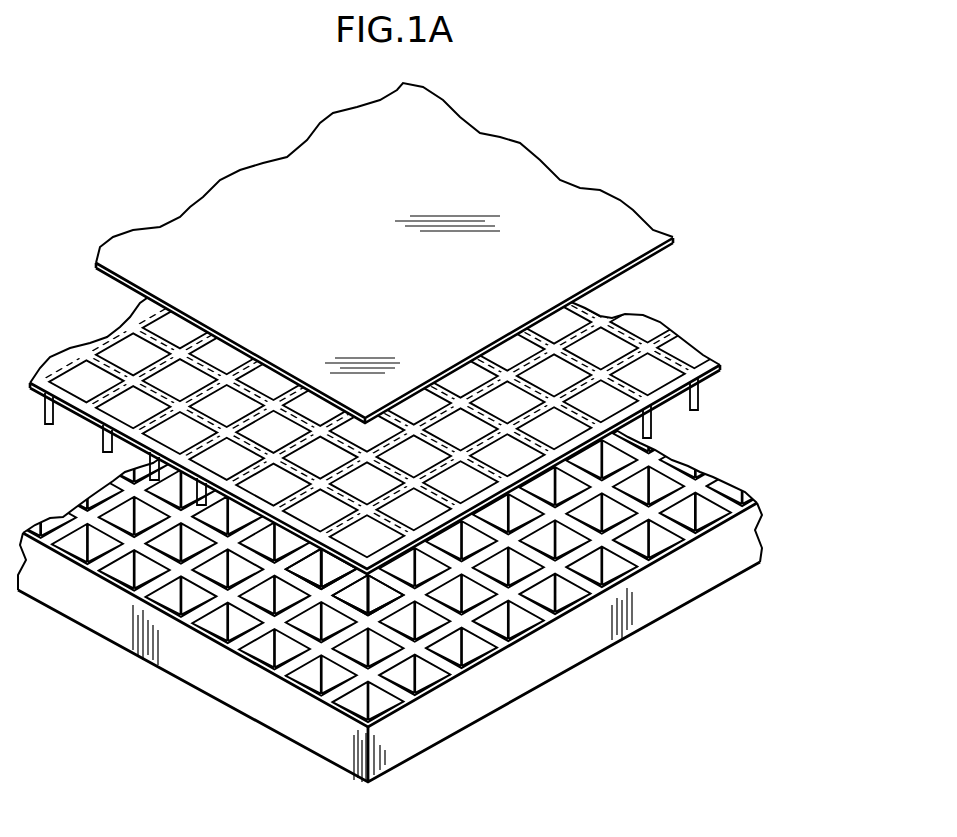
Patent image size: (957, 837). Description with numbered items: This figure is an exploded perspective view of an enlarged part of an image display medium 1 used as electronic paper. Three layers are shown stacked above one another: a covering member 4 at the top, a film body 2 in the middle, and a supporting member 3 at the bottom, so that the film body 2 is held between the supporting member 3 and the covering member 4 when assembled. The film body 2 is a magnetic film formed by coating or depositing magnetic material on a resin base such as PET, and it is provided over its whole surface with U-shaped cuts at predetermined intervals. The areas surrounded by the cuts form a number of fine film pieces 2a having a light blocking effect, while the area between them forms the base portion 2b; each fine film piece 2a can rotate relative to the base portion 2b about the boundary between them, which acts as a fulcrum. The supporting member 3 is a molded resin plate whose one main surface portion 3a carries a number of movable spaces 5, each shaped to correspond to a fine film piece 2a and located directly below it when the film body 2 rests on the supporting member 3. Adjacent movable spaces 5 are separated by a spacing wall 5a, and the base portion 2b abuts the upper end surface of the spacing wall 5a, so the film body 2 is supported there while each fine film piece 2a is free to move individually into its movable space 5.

The image display medium 1 is at (605, 134).
The film body 2 is at (393, 369).
The fine film piece 2a is at (155, 470).
The base portion 2b is at (127, 378).
The supporting member 3 is at (396, 535).
The main surface portion 3a is at (683, 467).
The covering member 4 is at (611, 220).
The movable space 5 is at (366, 657).
The spacing wall 5a is at (247, 608).